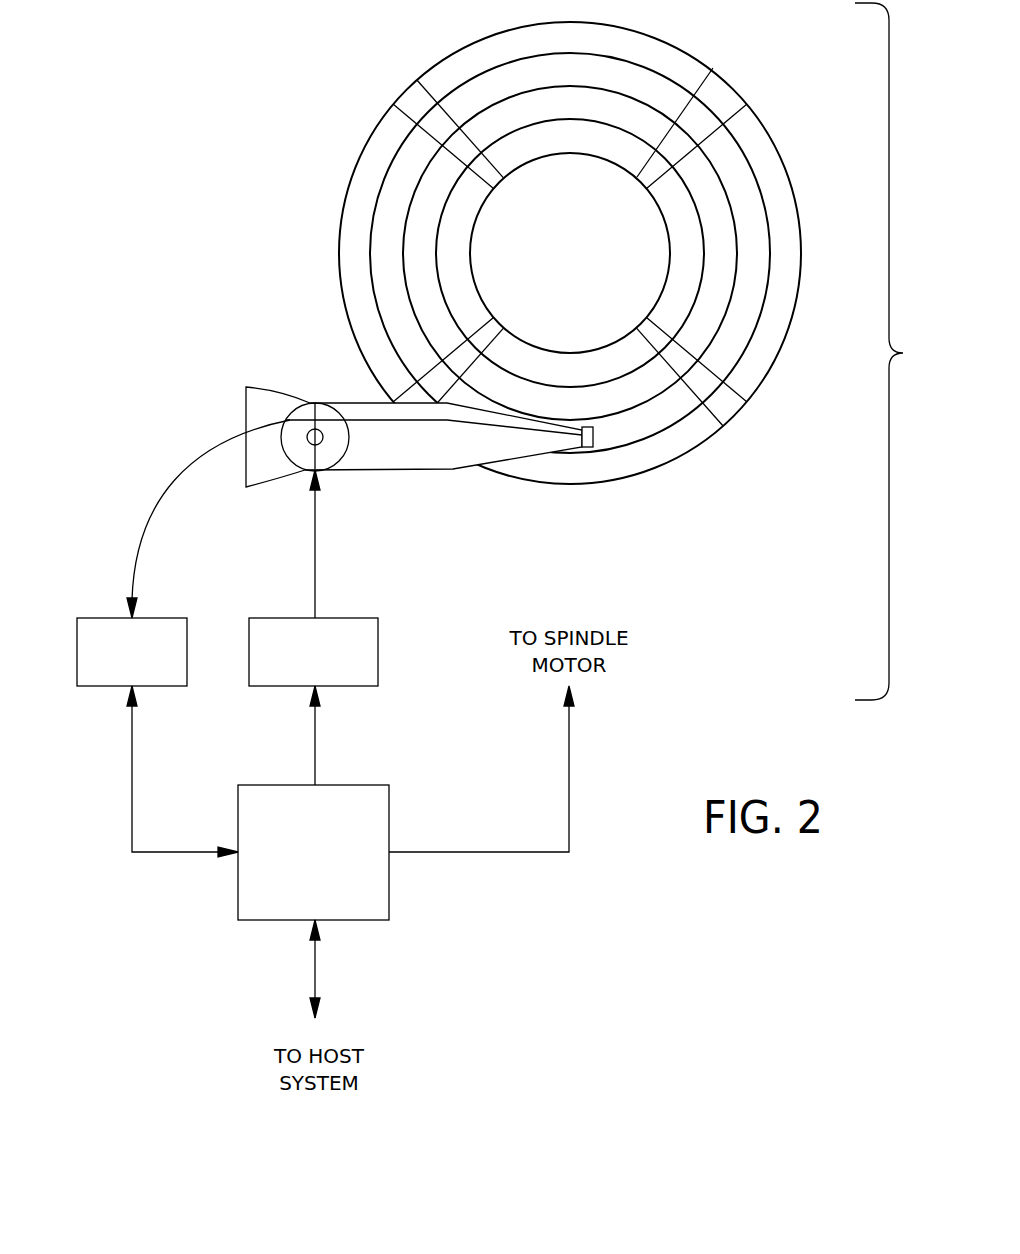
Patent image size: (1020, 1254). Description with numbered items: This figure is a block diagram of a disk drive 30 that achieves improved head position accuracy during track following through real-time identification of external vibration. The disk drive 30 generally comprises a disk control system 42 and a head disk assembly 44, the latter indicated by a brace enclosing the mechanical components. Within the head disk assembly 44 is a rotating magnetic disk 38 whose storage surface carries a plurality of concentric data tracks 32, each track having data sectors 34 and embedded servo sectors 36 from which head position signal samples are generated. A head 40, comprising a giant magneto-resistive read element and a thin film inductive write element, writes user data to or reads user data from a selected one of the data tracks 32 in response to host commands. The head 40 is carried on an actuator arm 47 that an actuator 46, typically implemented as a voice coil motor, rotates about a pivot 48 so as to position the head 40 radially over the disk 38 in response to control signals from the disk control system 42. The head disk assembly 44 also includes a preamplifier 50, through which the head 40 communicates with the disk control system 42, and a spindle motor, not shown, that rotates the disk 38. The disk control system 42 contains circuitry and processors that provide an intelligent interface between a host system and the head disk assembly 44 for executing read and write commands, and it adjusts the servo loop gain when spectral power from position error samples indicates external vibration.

The disk drive 30 is at (430, 244).
The concentric data tracks 32 is at (455, 228).
The data sectors 34 is at (340, 236).
The embedded servo sectors 36 is at (415, 100).
The magnetic disk 38 is at (712, 70).
The head 40 is at (593, 442).
The disk control system 42 is at (302, 904).
The head disk assembly 44 is at (895, 351).
The actuator 46 is at (301, 676).
The actuator arm 47 is at (427, 455).
The pivot 48 is at (312, 444).
The preamplifier 50 is at (120, 676).